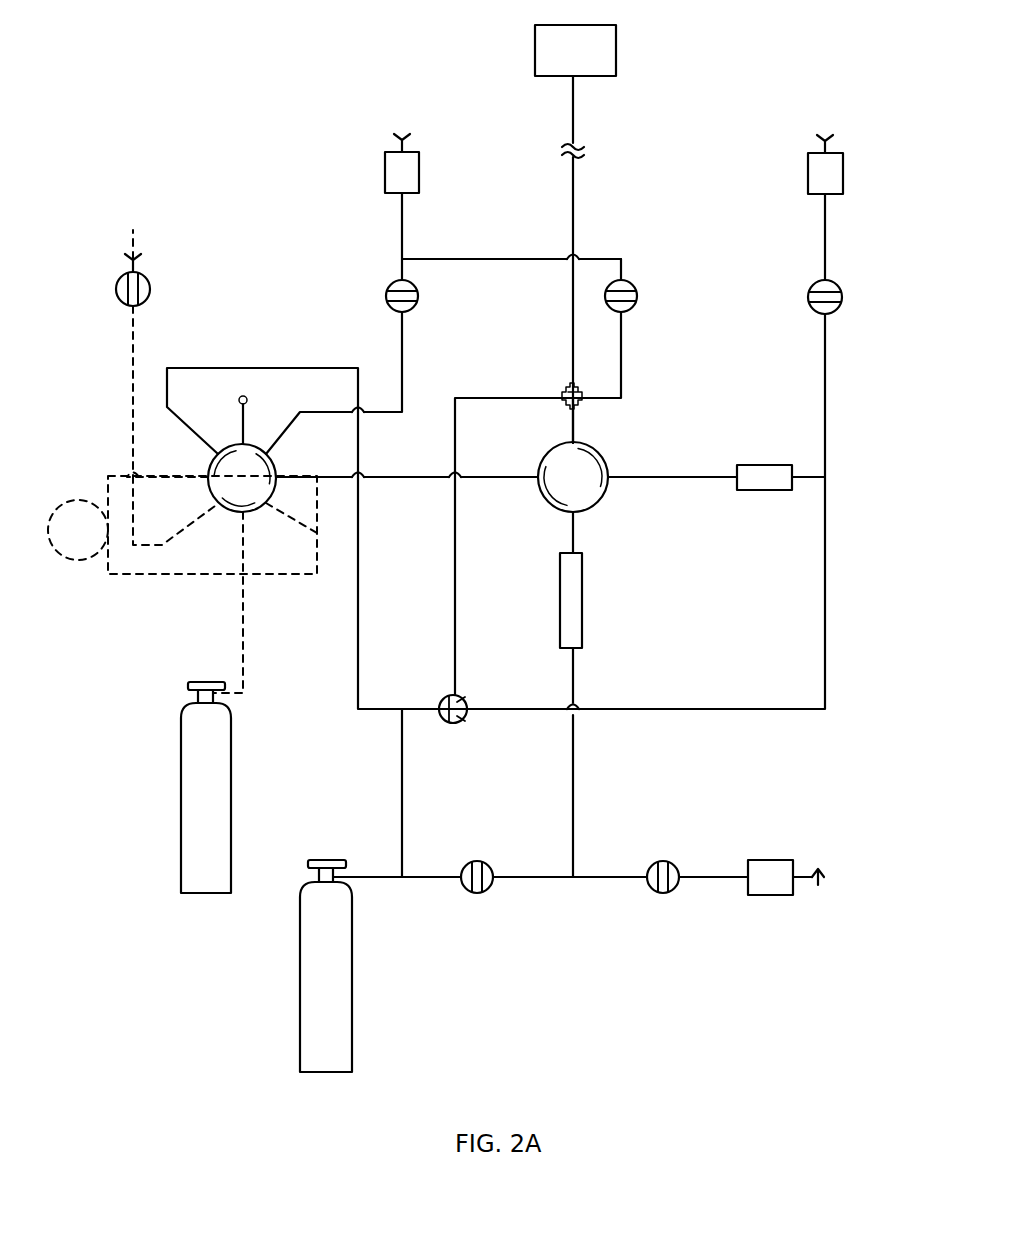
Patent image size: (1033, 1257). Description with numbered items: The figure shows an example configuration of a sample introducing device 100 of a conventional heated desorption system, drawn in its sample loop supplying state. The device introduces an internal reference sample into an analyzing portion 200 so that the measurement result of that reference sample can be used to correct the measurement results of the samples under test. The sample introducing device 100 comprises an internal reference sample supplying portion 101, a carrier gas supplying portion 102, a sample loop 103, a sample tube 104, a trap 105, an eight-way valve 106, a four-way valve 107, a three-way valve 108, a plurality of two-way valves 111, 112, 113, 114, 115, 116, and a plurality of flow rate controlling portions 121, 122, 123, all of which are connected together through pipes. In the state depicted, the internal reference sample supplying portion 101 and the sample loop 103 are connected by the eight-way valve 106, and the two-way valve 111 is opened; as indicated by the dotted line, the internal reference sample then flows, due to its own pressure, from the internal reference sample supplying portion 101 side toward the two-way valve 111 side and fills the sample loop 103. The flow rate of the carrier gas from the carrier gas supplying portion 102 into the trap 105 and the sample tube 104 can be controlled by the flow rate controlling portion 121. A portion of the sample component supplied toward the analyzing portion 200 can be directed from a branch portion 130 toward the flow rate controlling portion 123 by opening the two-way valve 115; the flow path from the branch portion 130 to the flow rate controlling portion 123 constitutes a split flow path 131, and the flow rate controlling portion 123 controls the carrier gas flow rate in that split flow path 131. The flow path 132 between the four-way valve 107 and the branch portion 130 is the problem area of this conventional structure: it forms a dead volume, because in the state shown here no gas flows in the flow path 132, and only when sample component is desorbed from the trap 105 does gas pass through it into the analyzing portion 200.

The sample introducing device 100 is at (212, 145).
The internal reference sample supplying portion 101 is at (181, 767).
The carrier gas supplying portion 102 is at (300, 972).
The sample loop 103 is at (77, 501).
The sample tube 104 is at (582, 595).
The trap 105 is at (758, 465).
The eight-way valve 106 is at (256, 445).
The four-way valve 107 is at (552, 505).
The three-way valve 108 is at (462, 721).
The two-way valve 111 is at (120, 282).
The two-way valve 112 is at (487, 891).
The two-way valve 113 is at (670, 891).
The two-way valve 114 is at (809, 290).
The two-way valve 115 is at (636, 305).
The two-way valve 116 is at (388, 290).
The flow rate controlling portion 121 is at (770, 860).
The flow rate controlling portion 122 is at (808, 170).
The flow rate controlling portion 123 is at (385, 170).
The branch portion 130 is at (566, 390).
The split flow path 131 is at (485, 259).
The flow path 132 is at (576, 430).
The analyzing portion 200 is at (616, 50).